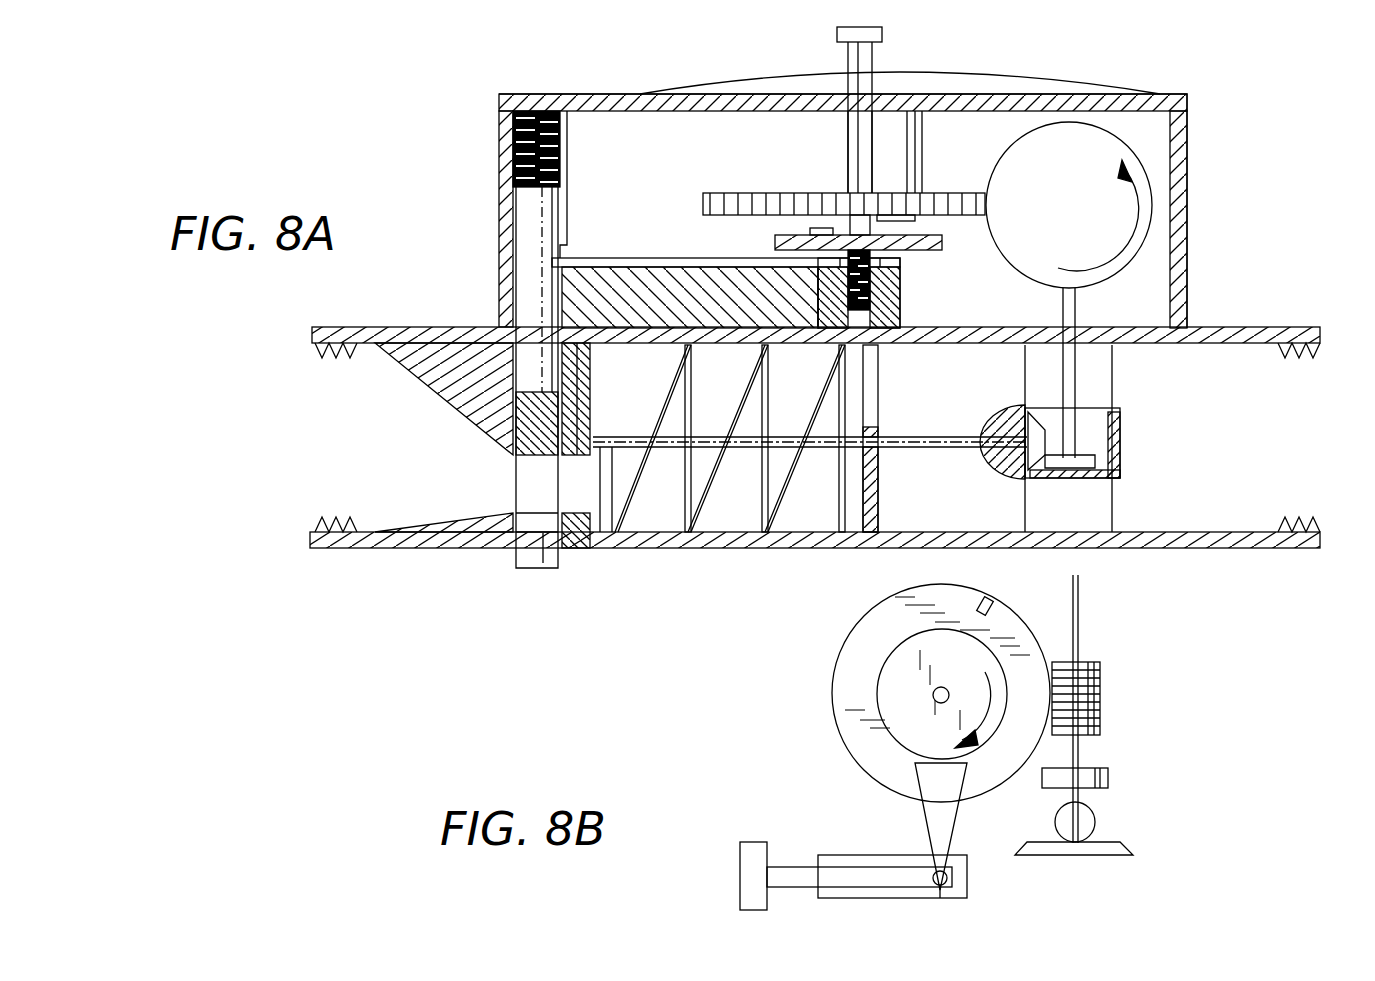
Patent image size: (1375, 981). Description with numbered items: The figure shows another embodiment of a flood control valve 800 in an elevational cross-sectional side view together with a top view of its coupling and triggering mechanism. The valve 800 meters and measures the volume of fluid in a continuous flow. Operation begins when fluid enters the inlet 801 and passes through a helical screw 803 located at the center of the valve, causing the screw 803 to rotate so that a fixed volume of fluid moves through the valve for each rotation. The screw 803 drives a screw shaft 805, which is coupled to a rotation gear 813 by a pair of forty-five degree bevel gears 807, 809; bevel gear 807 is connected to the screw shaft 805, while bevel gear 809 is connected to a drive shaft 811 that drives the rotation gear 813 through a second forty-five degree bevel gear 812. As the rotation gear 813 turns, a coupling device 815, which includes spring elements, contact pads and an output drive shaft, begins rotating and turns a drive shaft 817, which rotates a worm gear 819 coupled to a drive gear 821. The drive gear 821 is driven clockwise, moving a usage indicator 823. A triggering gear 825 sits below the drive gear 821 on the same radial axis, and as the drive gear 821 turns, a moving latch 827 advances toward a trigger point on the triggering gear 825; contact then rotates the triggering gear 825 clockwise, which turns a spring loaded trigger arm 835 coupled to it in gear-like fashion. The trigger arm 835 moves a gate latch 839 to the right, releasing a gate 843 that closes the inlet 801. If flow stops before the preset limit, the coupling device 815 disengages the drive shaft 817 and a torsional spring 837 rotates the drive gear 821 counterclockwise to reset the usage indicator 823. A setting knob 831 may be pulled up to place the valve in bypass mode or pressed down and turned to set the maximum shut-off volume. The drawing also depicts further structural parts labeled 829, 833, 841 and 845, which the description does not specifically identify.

In FIG. 8A, the flood control valve 800 is at (1215, 68).
In FIG. 8A, the inlet 801 is at (340, 352).
In FIG. 8A, the helical screw 803 is at (628, 468).
In FIG. 8A, the screw shaft 805 is at (932, 450).
In FIG. 8A, the bevel gear 807 is at (1090, 470).
In FIG. 8A, the bevel gear 809 is at (1118, 454).
In FIG. 8A, the drive shaft 811 is at (1072, 380).
In FIG. 8B, the second 45 degree bevel gear 812 is at (1090, 815).
In FIG. 8A, the rotation gear 813 is at (1113, 152).
In FIG. 8B, the rotation gear 813 is at (1122, 848).
In FIG. 8B, the coupling device 815 is at (1102, 775).
In FIG. 8B, the drive shaft 817 is at (1080, 605).
In FIG. 8B, the worm gear 819 is at (1100, 680).
In FIG. 8A, the drive gear 821 is at (818, 203).
In FIG. 8B, the drive gear 821 is at (842, 748).
In FIG. 8A, the usage indicator 823 is at (898, 214).
In FIG. 8B, the usage indicator 823 is at (992, 598).
In FIG. 8A, the triggering gear 825 is at (775, 245).
In FIG. 8B, the triggering gear 825 is at (885, 655).
In FIG. 8A, the moving latch 827 is at (880, 200).
In FIG. 8A, the hub 829 is at (840, 250).
In FIG. 8A, the setting knob 831 is at (848, 62).
In FIG. 8A, the cover 833 is at (1012, 88).
In FIG. 8A, the spring loaded trigger arm 835 is at (902, 270).
In FIG. 8B, the spring loaded trigger arm 835 is at (925, 838).
In FIG. 8A, the torsional spring 837 is at (880, 290).
In FIG. 8A, the gate latch 839 is at (580, 258).
In FIG. 8A, the spring 841 is at (520, 135).
In FIG. 8A, the gate 843 is at (530, 305).
In FIG. 8A, the upper plate 845 is at (1255, 327).